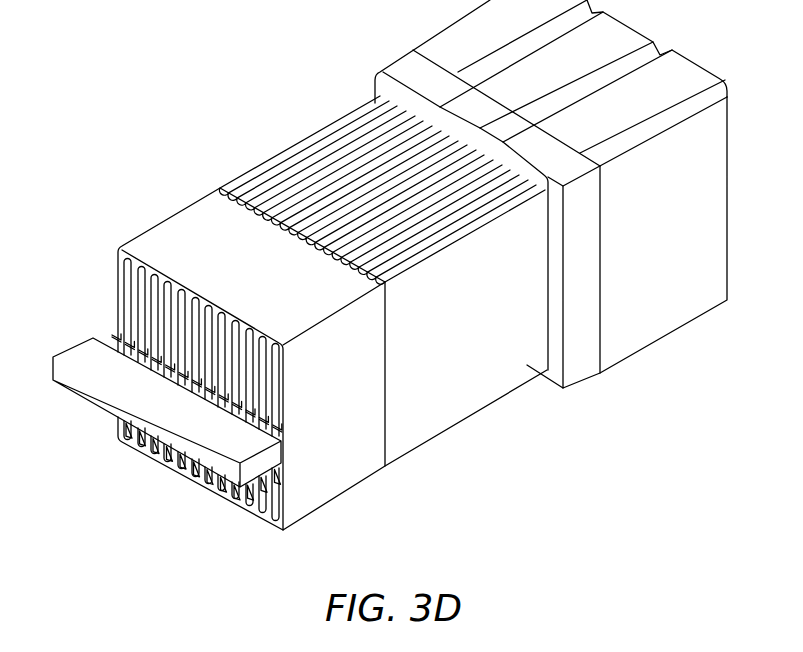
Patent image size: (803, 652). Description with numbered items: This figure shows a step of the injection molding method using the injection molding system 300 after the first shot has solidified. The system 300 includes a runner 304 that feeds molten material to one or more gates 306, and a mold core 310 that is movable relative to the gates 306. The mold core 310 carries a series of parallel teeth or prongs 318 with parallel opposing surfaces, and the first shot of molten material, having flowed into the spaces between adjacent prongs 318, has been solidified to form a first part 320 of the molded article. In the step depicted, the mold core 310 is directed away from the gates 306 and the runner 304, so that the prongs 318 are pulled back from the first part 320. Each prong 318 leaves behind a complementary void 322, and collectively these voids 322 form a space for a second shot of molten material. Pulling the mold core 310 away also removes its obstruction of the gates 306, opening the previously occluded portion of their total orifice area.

The injection molding system 300 is at (191, 86).
The runner 304 is at (82, 383).
The gates 306 is at (205, 383).
The mold core 310 is at (657, 325).
The prongs 318 is at (393, 163).
The first part 320 is at (330, 482).
The voids 322 is at (275, 500).